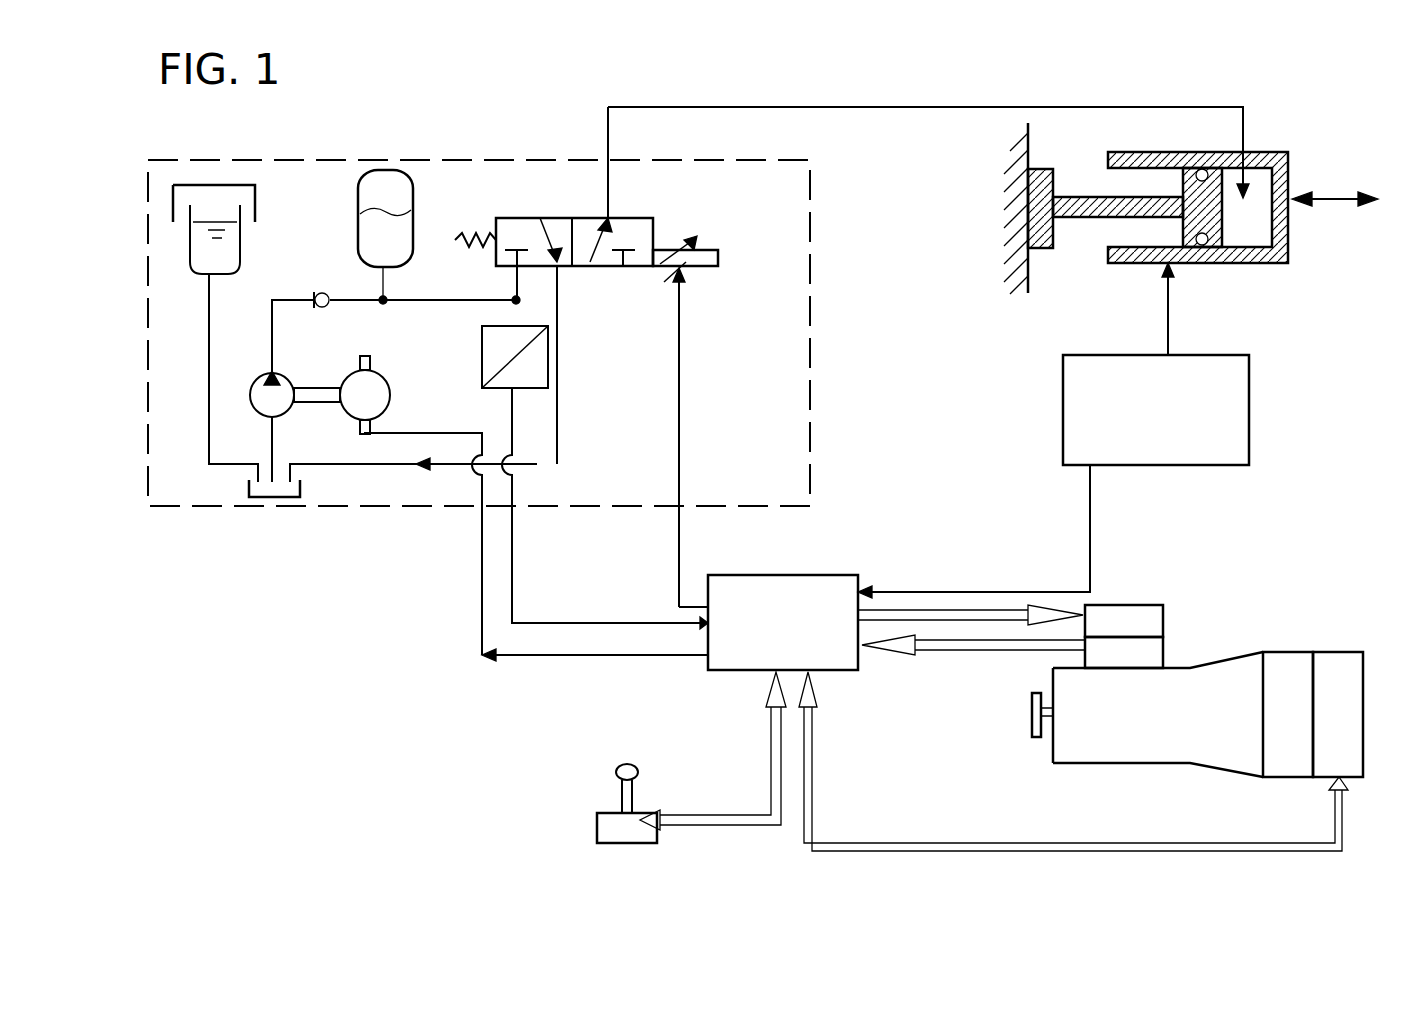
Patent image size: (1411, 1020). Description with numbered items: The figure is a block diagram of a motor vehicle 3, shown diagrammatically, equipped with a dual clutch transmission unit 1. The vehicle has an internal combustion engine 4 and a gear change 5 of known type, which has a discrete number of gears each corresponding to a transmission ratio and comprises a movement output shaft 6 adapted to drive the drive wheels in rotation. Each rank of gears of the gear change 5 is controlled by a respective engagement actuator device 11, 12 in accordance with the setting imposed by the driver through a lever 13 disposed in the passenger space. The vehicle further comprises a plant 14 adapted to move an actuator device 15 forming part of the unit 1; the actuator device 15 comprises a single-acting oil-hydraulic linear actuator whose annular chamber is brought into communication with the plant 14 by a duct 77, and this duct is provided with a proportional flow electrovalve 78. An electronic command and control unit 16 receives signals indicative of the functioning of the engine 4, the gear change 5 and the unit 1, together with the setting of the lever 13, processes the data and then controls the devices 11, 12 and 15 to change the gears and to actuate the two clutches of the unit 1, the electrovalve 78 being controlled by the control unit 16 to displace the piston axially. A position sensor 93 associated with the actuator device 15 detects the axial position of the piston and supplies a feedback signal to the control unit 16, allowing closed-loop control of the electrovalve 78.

The dual clutch transmission unit 1 is at (1288, 714).
The motor vehicle 3 is at (497, 156).
The internal combustion engine 4 is at (1338, 714).
The gear change 5 is at (1158, 714).
The movement output shaft 6 is at (1045, 745).
The engagement actuator device 11 is at (1150, 605).
The engagement actuator device 12 is at (1150, 650).
The lever 13 is at (597, 830).
The plant 14 is at (396, 165).
The actuator device 15 is at (1283, 148).
The electronic command and control unit 16 is at (830, 672).
The duct 77 is at (925, 108).
The proportional flow electrovalve 78 is at (656, 218).
The position sensor 93 is at (1053, 453).